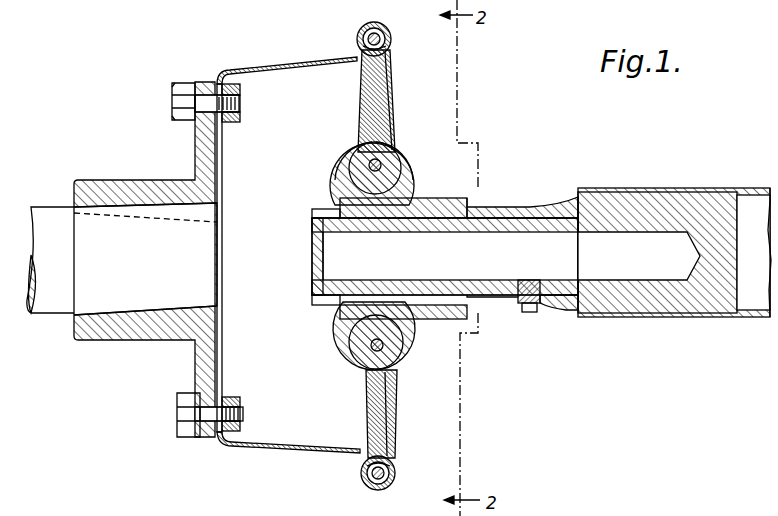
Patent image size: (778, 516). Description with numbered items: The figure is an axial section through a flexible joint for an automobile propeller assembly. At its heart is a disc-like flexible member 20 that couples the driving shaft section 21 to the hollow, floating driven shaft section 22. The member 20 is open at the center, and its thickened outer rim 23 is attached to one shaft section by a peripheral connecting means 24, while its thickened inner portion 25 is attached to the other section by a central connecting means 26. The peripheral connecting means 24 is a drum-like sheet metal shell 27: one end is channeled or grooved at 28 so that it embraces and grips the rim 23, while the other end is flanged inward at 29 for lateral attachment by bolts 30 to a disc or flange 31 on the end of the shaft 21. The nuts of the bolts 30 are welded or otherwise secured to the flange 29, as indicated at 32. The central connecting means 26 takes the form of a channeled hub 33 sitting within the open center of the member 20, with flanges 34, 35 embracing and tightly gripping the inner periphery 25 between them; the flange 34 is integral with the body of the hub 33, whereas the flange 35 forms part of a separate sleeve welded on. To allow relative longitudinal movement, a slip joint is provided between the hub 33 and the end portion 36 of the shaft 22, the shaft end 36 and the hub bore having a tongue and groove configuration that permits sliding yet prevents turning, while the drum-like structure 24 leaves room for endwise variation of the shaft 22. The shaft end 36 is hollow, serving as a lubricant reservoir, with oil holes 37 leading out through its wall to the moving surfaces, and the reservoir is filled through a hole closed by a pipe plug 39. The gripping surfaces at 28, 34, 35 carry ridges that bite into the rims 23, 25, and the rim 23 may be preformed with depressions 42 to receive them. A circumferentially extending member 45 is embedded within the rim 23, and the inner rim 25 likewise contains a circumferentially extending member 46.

The disc-like flexible member 20 is at (395, 418).
The driving shaft section 21 is at (45, 316).
The driven shaft section 22 is at (614, 186).
The rim 23 is at (388, 46).
The peripheral connecting means 24 is at (213, 234).
The inner portion 25 is at (337, 165).
The central connecting means 26 is at (463, 192).
The sheet metal shell 27 is at (295, 66).
The channeled or grooved end 28 is at (363, 32).
The inward flange 29 is at (215, 125).
The bolts 30 is at (182, 107).
The disc or flange 31 is at (195, 165).
The welded nut securing 32 is at (228, 124).
The hub 33 is at (470, 201).
The flange 34 is at (346, 157).
The flange 35 is at (399, 152).
The shaft end portion 36 is at (570, 300).
The oil holes 37 is at (409, 290).
The pipe plug 39 is at (522, 313).
The depressions 42 is at (364, 42).
The circumferential member 45 is at (381, 36).
The circumferential member 46 is at (392, 168).